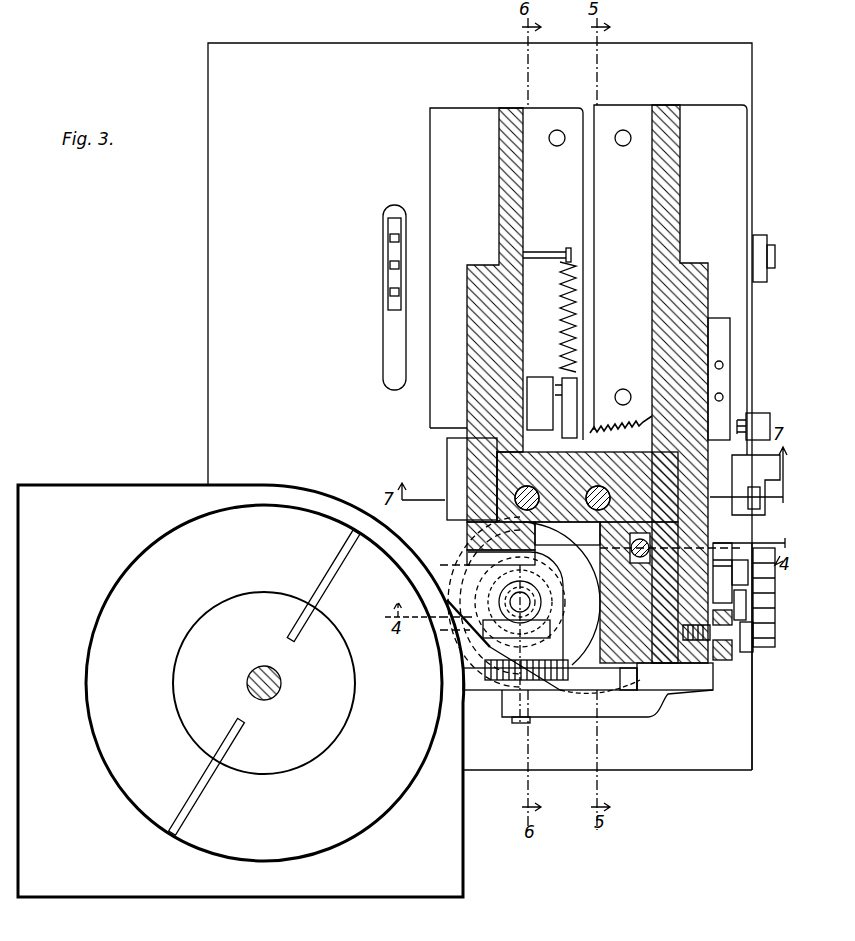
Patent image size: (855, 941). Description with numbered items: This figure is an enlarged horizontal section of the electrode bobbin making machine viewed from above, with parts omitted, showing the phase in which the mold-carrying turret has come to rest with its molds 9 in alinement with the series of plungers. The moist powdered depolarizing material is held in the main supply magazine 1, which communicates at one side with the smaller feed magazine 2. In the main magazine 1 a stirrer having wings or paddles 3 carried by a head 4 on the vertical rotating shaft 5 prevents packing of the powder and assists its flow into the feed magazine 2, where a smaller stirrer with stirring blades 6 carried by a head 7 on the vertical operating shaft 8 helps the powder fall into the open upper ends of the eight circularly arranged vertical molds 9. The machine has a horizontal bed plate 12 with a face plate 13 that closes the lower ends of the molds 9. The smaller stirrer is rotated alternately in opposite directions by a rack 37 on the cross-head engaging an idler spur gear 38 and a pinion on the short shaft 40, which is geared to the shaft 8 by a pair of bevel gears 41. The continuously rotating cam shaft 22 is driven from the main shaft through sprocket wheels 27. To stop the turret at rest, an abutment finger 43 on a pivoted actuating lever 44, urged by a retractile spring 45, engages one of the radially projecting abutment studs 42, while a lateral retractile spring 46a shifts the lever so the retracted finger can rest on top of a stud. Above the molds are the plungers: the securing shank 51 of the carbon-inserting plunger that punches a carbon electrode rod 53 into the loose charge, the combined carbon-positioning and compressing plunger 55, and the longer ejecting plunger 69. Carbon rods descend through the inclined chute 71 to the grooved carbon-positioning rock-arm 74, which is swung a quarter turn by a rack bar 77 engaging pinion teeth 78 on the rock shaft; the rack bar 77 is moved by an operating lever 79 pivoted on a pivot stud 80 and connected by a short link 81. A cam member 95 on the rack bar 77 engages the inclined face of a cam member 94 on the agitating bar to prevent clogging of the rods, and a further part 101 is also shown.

The main supply magazine 1 is at (380, 886).
The auxiliary magazine or feed magazine 2 is at (462, 666).
The wings or paddles 3 is at (338, 554).
The head 4 is at (181, 700).
The vertical rotating shaft 5 is at (263, 665).
The stirring blades 6 is at (530, 561).
The head 7 is at (500, 588).
The vertical operating shaft 8 is at (520, 645).
The vertical molds 9 is at (600, 682).
The bed plate 12 is at (215, 350).
The face plate 13 is at (747, 770).
The cam shaft 22 is at (770, 245).
The sprocket wheels 27 is at (394, 280).
The rack 37 is at (572, 692).
The spur gear 38 is at (498, 700).
The short rearwardly extending shaft 40 is at (515, 724).
The bevel gears 41 is at (452, 645).
The abutment studs 42 is at (622, 692).
The abutment finger 43 is at (540, 403).
The actuating lever 44 is at (571, 386).
The retractile spring 45 is at (576, 270).
The retractile spring 46a is at (618, 392).
The securing shank 51 is at (680, 490).
The carbon electrode rod 53 is at (567, 533).
The carbon-positioning and compressing plunger 55 is at (621, 434).
The ejecting plunger 69 is at (478, 492).
The inclined chute 71 is at (775, 597).
The carbon-positioning rock-arm 74 is at (534, 593).
The rack bar 77 is at (763, 562).
The pinion teeth 78 is at (725, 553).
The operating lever 79 is at (716, 690).
The pivot stud 80 is at (731, 662).
The short link 81 is at (766, 642).
The cam member 94 is at (756, 485).
The cam member 95 is at (738, 398).
The detent 101 is at (750, 414).